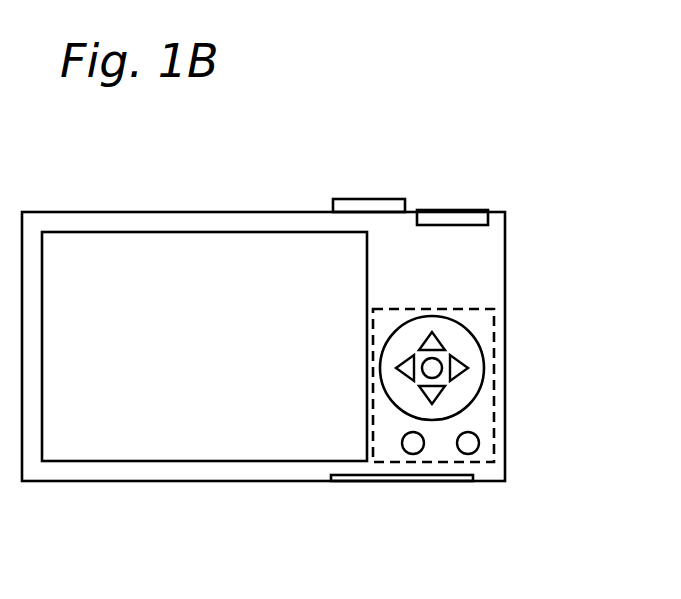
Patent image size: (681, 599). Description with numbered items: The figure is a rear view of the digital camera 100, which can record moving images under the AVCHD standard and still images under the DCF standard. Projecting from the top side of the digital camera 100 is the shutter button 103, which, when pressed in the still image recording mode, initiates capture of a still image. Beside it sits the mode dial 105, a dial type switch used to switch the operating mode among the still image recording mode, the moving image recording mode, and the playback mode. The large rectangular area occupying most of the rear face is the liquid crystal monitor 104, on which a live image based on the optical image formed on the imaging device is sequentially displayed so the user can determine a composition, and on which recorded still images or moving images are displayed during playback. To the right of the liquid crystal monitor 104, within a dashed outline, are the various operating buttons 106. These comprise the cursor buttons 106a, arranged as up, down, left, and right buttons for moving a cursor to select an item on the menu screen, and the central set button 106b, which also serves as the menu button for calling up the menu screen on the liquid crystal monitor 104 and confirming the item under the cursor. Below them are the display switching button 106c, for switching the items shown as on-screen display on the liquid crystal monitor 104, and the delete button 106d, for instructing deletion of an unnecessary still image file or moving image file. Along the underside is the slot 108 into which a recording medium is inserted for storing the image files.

The digital camera 100 is at (246, 190).
The shutter button 103 is at (370, 199).
The liquid crystal monitor 104 is at (110, 232).
The mode dial 105 is at (474, 212).
The various operating buttons 106 is at (447, 309).
The cursor buttons 106a is at (440, 342).
The set button 106b is at (437, 364).
The display switching button 106c is at (418, 448).
The delete button 106d is at (475, 447).
The slot 108 is at (347, 482).